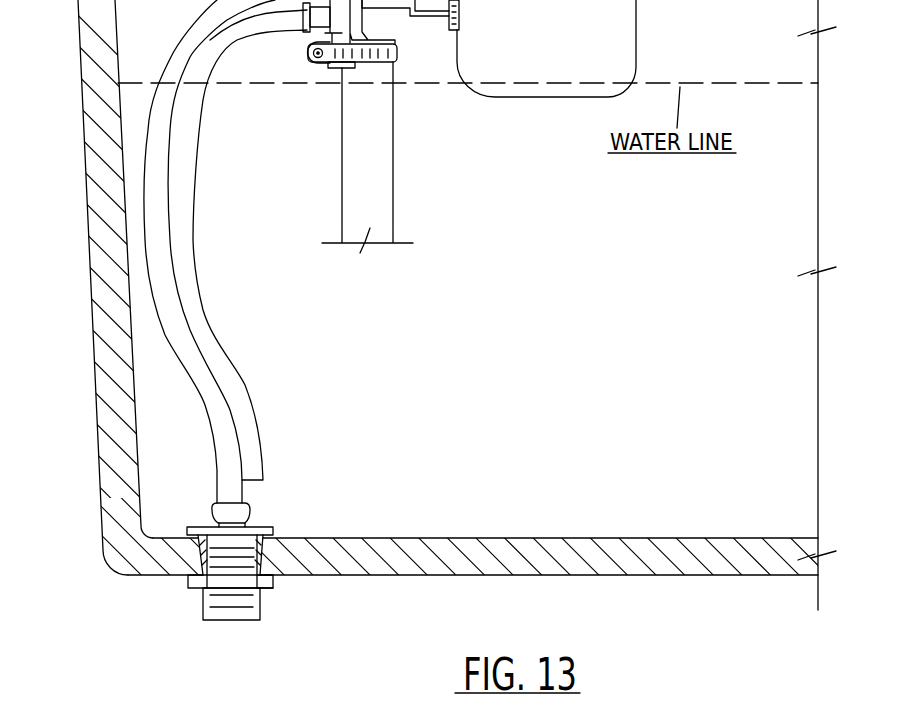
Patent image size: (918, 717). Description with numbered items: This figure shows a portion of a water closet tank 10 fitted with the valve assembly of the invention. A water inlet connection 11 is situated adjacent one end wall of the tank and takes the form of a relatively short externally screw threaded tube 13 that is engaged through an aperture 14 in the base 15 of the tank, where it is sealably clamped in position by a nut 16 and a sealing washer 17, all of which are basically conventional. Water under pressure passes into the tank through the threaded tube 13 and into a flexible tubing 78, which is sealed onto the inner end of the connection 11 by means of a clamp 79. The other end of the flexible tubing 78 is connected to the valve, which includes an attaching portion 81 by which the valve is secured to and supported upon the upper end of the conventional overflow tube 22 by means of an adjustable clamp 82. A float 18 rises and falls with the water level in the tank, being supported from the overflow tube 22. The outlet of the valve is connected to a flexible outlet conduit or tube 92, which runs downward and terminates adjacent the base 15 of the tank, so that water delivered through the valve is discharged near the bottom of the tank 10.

The water closet tank 10 is at (127, 428).
The water inlet connection 11 is at (203, 600).
The externally screw threaded tube 13 is at (217, 607).
The aperture 14 is at (275, 583).
The base 15 is at (422, 576).
The nut 16 is at (195, 582).
The sealing washer 17 is at (275, 531).
The float 18 is at (530, 93).
The overflow tube 22 is at (380, 140).
The flexible tubing 78 is at (212, 400).
The clamp 79 is at (248, 503).
The attaching portion 81 is at (333, 68).
The adjustable clamp 82 is at (373, 60).
The outlet conduit or tube 92 is at (230, 367).